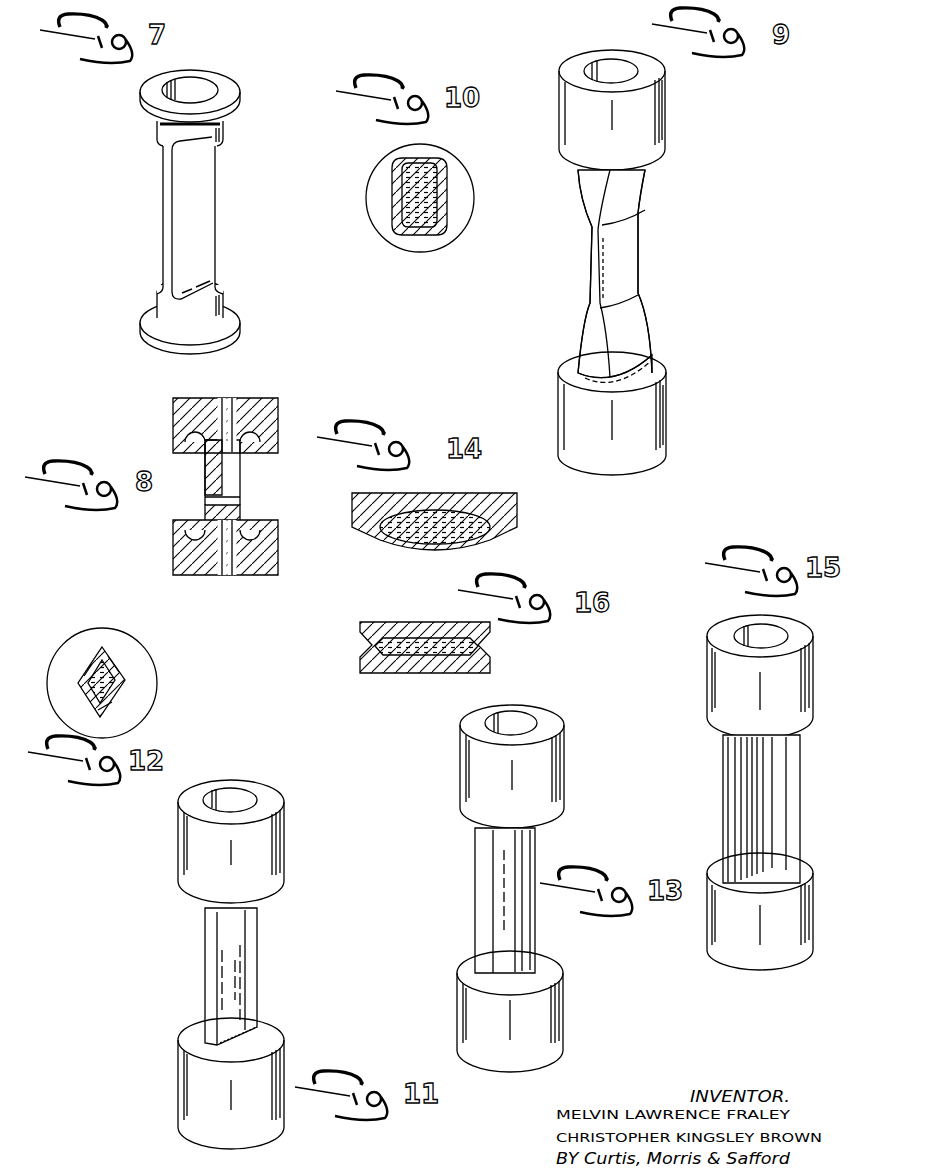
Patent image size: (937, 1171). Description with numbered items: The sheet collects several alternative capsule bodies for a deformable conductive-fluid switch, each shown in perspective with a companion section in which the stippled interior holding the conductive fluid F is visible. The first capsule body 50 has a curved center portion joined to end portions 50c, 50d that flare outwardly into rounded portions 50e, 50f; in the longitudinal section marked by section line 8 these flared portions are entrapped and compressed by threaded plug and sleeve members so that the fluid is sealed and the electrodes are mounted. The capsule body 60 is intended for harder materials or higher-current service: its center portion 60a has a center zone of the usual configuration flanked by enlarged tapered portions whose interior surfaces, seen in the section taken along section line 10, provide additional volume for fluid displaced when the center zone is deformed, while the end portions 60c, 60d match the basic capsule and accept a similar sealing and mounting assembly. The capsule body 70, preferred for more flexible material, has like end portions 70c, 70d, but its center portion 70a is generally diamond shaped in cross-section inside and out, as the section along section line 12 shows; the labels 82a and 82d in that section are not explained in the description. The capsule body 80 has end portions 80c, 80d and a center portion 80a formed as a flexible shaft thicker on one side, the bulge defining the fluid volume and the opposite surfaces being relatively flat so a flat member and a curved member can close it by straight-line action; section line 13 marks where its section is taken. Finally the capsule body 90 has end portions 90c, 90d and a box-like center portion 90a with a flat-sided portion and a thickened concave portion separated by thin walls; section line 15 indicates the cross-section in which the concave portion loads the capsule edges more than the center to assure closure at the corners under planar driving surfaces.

In FIG. 7, the capsule body 50 is at (195, 218).
In FIG. 8, the capsule body 50 is at (243, 485).
In FIG. 7, the end portion 50c is at (223, 127).
In FIG. 7, the end portion 50d is at (212, 307).
In FIG. 7, the flared portion 50e is at (230, 87).
In FIG. 7, the flared portion 50f is at (152, 325).
In FIG. 7, the section line 8 is at (262, 153).
In FIG. 9, the capsule body 60 is at (624, 262).
In FIG. 10, the center portion 60a is at (445, 180).
In FIG. 9, the center portion 60a is at (593, 280).
In FIG. 9, the end portion 60c is at (650, 109).
In FIG. 10, the end portion 60d is at (437, 250).
In FIG. 9, the end portion 60d is at (650, 418).
In FIG. 9, the section line 10— 10 is at (697, 142).
In FIG. 10, the conductive fluid F is at (407, 187).
In FIG. 14, the conductive fluid F is at (470, 527).
In FIG. 16, the conductive fluid F is at (402, 648).
In FIG. 12, the conductive fluid F is at (112, 692).
In FIG. 11, the capsule body 70 is at (238, 964).
In FIG. 11, the center portion 70a is at (208, 932).
In FIG. 11, the end portion 70c is at (272, 850).
In FIG. 11, the end portion 70d is at (195, 1092).
In FIG. 11, the section line 12— 12 is at (312, 913).
In FIG. 12, the capsule body 80 is at (83, 660).
In FIG. 13, the capsule body 80 is at (521, 888).
In FIG. 14, the center portion 80a is at (407, 545).
In FIG. 13, the center portion 80a is at (523, 925).
In FIG. 13, the end portion 80c is at (548, 775).
In FIG. 13, the end portion 80d is at (543, 1023).
In FIG. 12, the stem section wall 82a is at (102, 647).
In FIG. 12, the stem section edge 82d is at (157, 668).
In FIG. 13, the section line 13 is at (535, 852).
In FIG. 15, the capsule body 90 is at (753, 809).
In FIG. 16, the center portion 90a is at (445, 661).
In FIG. 15, the center portion 90a is at (772, 838).
In FIG. 15, the end portion 90c is at (725, 695).
In FIG. 15, the end portion 90d is at (777, 958).
In FIG. 15, the section line 15 is at (827, 737).